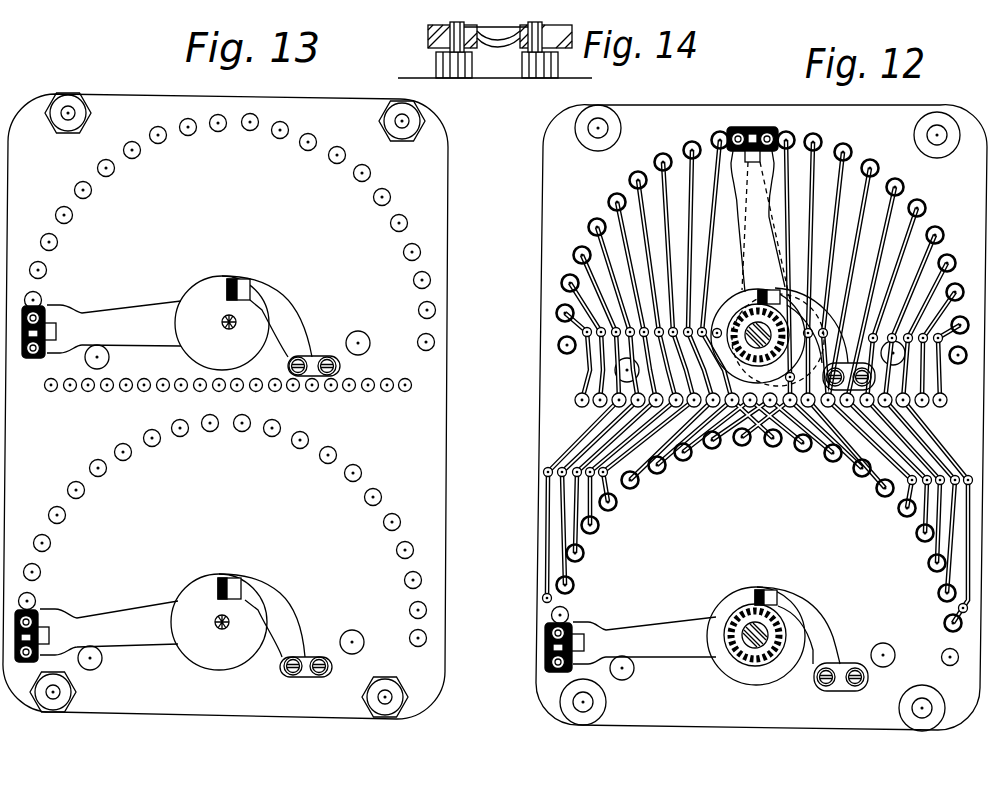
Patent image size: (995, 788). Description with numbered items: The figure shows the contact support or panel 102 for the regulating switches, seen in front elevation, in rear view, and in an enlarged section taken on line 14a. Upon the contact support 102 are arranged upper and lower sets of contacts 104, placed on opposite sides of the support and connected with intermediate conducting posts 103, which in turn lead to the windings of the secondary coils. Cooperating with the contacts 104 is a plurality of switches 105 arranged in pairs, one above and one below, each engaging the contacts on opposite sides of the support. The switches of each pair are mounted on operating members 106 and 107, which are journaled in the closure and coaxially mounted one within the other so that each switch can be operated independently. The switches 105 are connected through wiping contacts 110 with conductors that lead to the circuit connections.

In FIG. 13, the contact support 102 is at (148, 564).
In FIG. 13, the intermediate conducting posts 103 is at (51, 392).
In FIG. 13, the contacts 104 is at (46, 270).
In FIG. 14, the contacts 104 is at (538, 68).
In FIG. 12, the contacts 104 is at (596, 220).
In FIG. 13, the switches 105 is at (142, 473).
In FIG. 14, the switches 105 is at (497, 46).
In FIG. 12, the switches 105 is at (684, 418).
In FIG. 12, the operating member 106 is at (748, 612).
In FIG. 13, the operating member 107 is at (229, 330).
In FIG. 12, the operating member 107 is at (758, 348).
In FIG. 13, the wiping contacts 110 is at (288, 312).
In FIG. 12, the wiping contacts 110 is at (776, 297).
In FIG. 12, the section line 14a is at (727, 138).